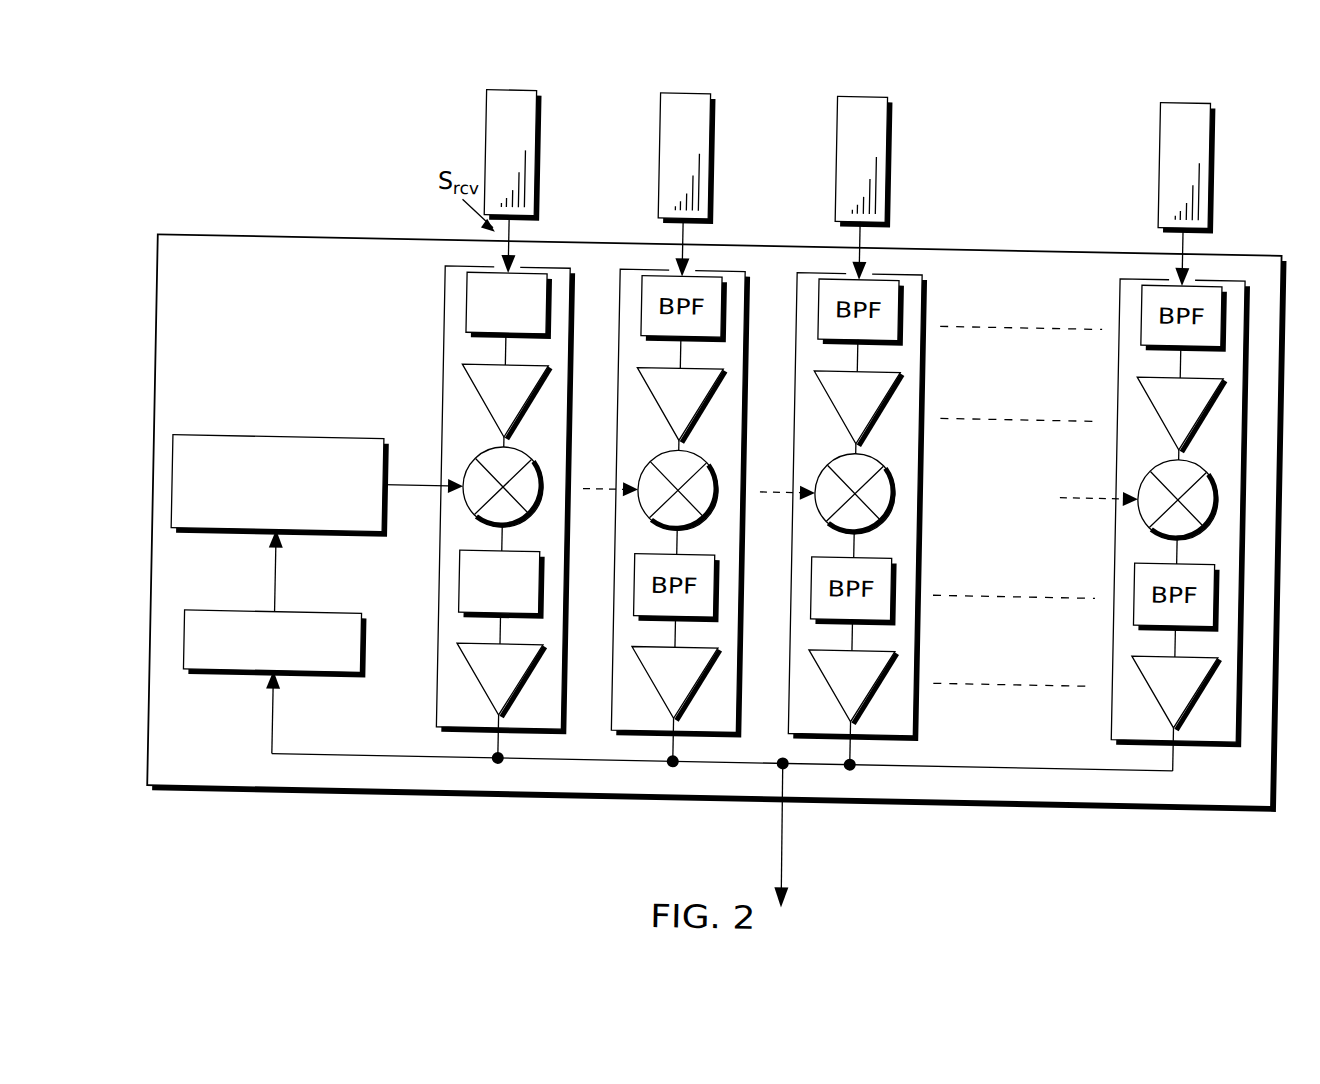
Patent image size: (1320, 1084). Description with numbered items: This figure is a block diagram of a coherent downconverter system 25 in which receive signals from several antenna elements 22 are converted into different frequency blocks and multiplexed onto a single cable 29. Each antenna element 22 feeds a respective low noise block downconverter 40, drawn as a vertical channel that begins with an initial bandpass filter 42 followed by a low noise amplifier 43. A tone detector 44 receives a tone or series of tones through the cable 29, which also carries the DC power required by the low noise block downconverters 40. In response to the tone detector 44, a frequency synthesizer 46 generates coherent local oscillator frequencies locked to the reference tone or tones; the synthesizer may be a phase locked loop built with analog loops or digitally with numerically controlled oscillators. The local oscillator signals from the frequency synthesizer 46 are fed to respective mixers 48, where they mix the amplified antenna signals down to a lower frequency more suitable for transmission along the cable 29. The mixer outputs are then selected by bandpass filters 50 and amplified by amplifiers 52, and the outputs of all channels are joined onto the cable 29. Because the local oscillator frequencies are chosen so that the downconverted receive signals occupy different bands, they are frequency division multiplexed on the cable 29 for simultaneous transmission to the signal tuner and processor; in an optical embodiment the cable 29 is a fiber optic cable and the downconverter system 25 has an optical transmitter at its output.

The antenna element 22 is at (479, 99).
The downconverter system 25 is at (264, 232).
The cable 29 is at (806, 846).
The low noise block downconverter 40 is at (471, 478).
The initial bandpass filter 42 is at (463, 300).
The low noise amplifier 43 is at (463, 386).
The tone detector 44 is at (242, 616).
The frequency synthesizer 46 is at (258, 441).
The mixer 48 is at (472, 458).
The bandpass filter 50 is at (461, 574).
The amplifier 52 is at (462, 660).